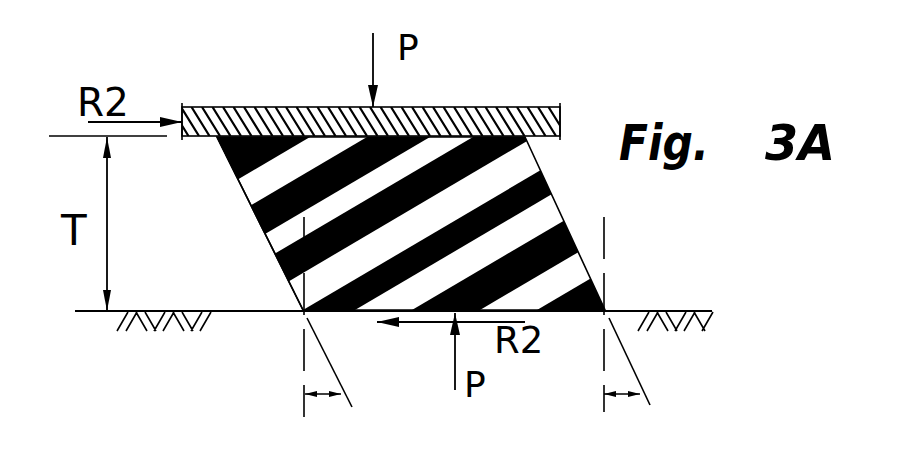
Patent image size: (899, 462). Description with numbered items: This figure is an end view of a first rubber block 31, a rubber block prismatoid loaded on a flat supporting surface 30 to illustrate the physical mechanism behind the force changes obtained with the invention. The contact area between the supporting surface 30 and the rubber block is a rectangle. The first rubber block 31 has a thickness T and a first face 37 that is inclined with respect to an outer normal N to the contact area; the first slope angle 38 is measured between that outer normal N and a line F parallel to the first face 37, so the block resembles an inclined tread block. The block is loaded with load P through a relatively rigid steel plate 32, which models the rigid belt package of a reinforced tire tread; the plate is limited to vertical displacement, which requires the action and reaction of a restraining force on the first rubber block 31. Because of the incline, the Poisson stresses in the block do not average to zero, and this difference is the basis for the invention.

The supporting surface 30 is at (632, 305).
The first rubber block 31 is at (515, 238).
The steel plate 32 is at (462, 117).
The first face 37 is at (250, 210).
The first slope angle 38 is at (468, 333).